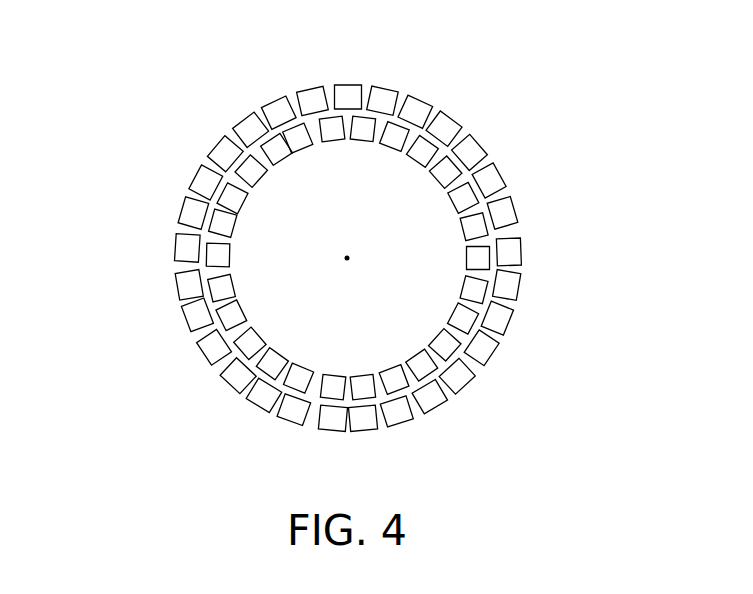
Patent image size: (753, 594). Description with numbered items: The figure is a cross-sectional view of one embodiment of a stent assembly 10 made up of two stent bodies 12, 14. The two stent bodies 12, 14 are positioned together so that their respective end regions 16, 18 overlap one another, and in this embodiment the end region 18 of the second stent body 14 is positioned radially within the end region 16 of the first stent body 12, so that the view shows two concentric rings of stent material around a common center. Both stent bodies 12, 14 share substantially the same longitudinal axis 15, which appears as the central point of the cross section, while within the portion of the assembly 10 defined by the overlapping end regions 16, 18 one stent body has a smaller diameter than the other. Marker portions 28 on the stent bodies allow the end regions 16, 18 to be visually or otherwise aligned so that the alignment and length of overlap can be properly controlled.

The stent assembly 10 is at (130, 125).
The stent body 12 is at (498, 365).
The stent body 14 is at (503, 219).
The longitudinal axis 15 is at (347, 258).
The end region 16 is at (517, 292).
The end region 18 is at (483, 183).
The marker portion 28 is at (313, 97).